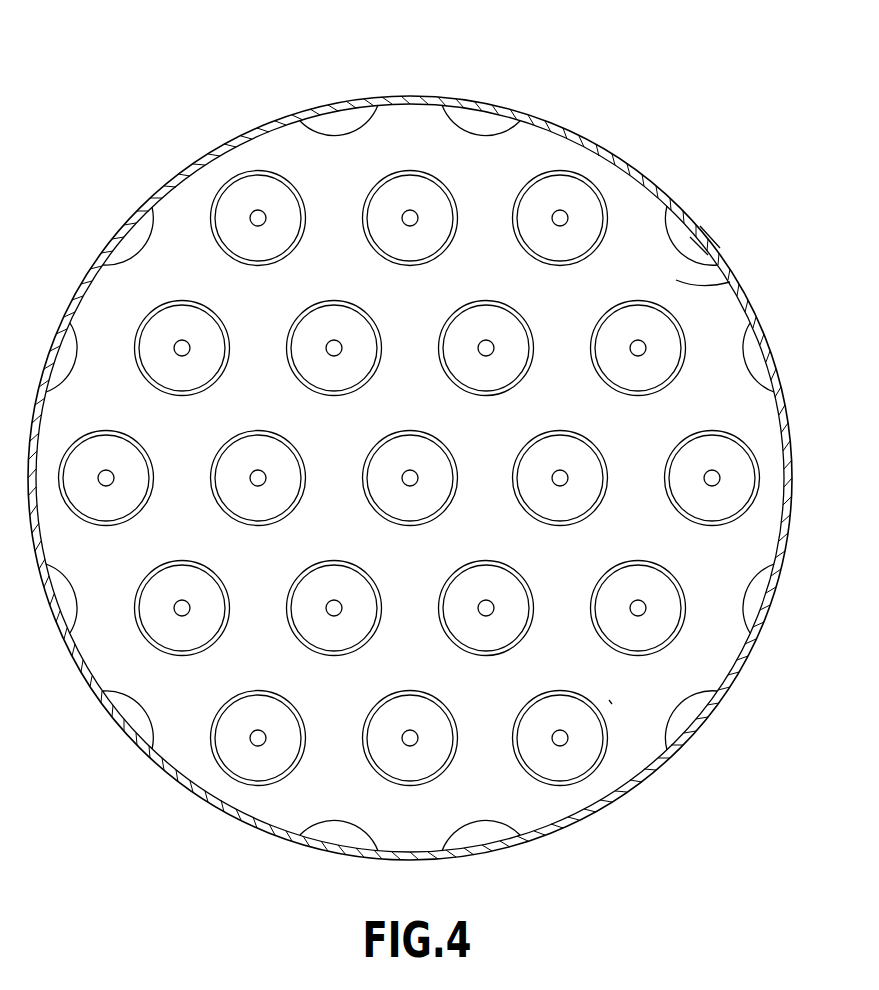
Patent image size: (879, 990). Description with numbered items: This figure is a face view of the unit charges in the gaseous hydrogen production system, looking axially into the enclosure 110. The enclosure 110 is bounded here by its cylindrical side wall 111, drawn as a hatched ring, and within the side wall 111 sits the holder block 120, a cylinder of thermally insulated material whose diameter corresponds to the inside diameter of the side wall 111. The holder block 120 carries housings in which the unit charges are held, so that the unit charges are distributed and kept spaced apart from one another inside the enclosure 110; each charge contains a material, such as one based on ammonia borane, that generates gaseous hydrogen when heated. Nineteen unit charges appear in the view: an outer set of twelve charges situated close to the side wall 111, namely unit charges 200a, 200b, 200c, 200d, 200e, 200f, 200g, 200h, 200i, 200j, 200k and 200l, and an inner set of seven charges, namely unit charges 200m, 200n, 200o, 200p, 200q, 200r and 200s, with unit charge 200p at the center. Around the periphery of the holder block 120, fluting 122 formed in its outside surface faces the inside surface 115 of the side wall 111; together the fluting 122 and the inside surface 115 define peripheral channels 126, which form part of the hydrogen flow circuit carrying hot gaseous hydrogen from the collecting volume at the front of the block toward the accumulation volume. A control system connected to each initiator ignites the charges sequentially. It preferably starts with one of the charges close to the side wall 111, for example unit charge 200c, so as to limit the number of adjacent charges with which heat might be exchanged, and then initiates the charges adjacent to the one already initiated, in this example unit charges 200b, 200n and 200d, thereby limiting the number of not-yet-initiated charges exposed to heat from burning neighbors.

The enclosure 110 is at (501, 96).
The side wall 111 is at (599, 142).
The fluting 122 is at (681, 236).
The peripheral channels 126 is at (697, 254).
The inside surface 115 is at (680, 274).
The holder block 120 is at (614, 706).
The unit charge 200a is at (245, 726).
The unit charge 200b is at (397, 726).
The unit charge 200c is at (547, 726).
The unit charge 200d is at (625, 596).
The unit charge 200e is at (699, 466).
The unit charge 200f is at (625, 336).
The unit charge 200g is at (547, 206).
The unit charge 200h is at (397, 206).
The unit charge 200i is at (245, 206).
The unit charge 200j is at (169, 336).
The unit charge 200k is at (93, 466).
The unit charge 200l is at (169, 596).
The unit charge 200m is at (321, 596).
The unit charge 200n is at (473, 596).
The unit charge 200o is at (245, 466).
The unit charge 200p is at (397, 466).
The unit charge 200q is at (547, 466).
The unit charge 200r is at (321, 336).
The unit charge 200s is at (473, 336).